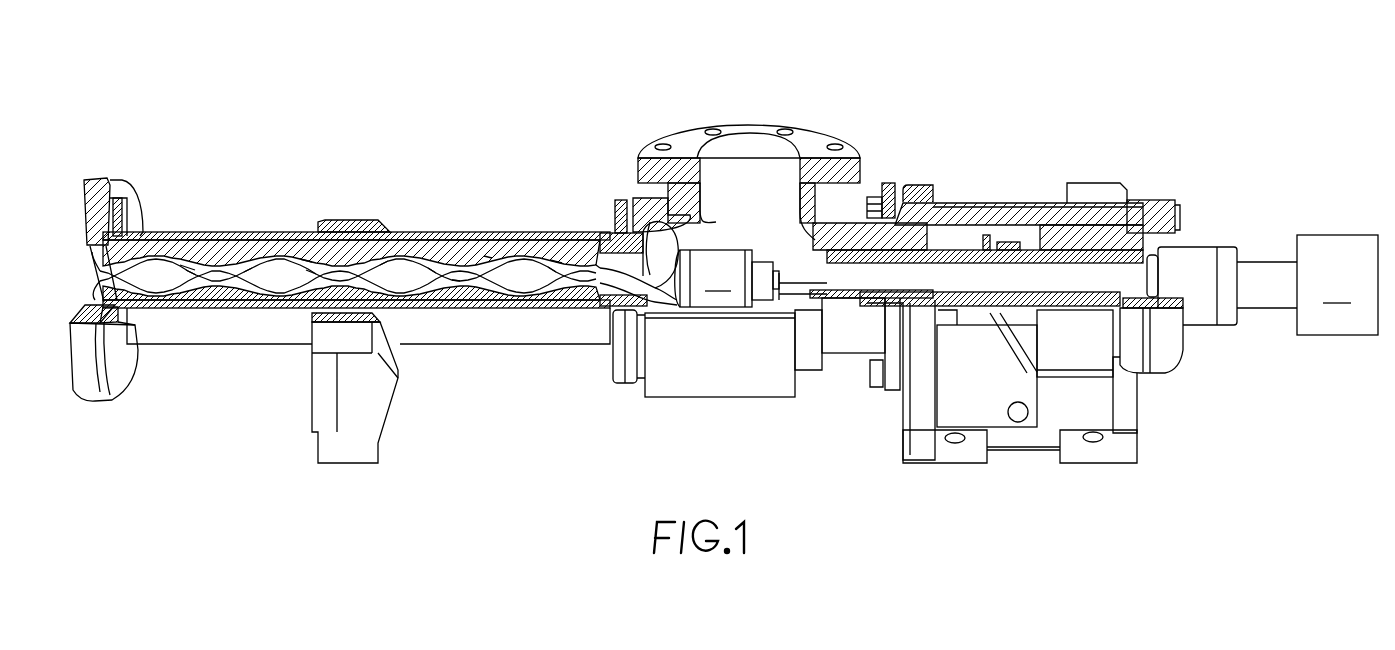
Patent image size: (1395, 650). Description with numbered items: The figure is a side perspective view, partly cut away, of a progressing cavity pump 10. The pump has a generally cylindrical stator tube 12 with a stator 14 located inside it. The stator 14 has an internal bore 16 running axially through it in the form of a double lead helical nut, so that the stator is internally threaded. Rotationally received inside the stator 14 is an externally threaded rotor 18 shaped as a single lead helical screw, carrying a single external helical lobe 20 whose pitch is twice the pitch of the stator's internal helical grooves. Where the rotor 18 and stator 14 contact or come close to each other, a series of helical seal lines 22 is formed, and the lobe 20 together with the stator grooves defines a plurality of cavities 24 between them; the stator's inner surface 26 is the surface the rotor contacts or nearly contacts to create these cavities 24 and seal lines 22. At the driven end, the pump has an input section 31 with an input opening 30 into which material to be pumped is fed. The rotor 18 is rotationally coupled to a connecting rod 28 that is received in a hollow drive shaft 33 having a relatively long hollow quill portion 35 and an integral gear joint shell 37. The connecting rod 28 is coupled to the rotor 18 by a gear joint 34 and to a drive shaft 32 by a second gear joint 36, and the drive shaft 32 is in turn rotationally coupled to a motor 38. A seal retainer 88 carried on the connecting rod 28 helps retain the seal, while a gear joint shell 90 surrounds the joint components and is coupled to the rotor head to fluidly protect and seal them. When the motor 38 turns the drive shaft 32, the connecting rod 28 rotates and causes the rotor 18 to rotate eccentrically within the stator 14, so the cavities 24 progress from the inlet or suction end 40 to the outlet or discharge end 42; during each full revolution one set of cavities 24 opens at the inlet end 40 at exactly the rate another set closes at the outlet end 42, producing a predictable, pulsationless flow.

The progressing cavity pump 10 is at (1190, 84).
The stator tube 12 is at (250, 346).
The stator 14 is at (420, 250).
The internal bore 16 is at (217, 260).
The rotor 18 is at (186, 270).
The external helical lobe 20 is at (193, 273).
The helical seal lines 22 is at (306, 262).
The cavities 24 is at (488, 257).
The inner surface 26 is at (463, 262).
The connecting rod 28 is at (797, 282).
The input opening 30 is at (783, 158).
The input section 31 is at (834, 372).
The drive shaft 32 is at (1274, 268).
The hollow drive shaft 33 is at (969, 272).
The gear joint 34 is at (727, 278).
The hollow quill portion 35 is at (1043, 273).
The gear joint 36 is at (1197, 322).
The gear joint shell 37 is at (1197, 248).
The motor 38 is at (1337, 285).
The inlet end 40 is at (602, 387).
The outlet end 42 is at (102, 414).
The seal retainer 88 is at (773, 288).
The gear joint shell 90 is at (718, 250).